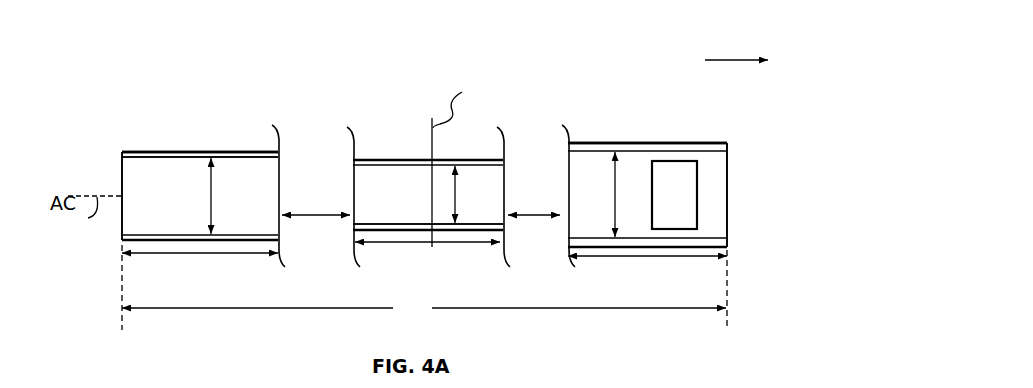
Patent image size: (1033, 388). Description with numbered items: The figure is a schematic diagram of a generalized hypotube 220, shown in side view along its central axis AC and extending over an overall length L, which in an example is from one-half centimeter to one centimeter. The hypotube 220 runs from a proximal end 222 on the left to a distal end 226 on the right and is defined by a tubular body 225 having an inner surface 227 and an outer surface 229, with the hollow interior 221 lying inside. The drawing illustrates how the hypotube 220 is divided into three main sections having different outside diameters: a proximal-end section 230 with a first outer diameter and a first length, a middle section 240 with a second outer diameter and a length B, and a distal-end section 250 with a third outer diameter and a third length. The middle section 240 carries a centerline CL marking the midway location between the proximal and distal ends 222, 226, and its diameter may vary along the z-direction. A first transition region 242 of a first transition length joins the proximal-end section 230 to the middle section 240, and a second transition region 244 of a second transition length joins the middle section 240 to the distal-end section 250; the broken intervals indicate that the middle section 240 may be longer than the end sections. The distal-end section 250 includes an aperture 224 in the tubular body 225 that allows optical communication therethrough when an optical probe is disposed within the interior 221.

The hypotube 220 is at (236, 71).
The interior 221 is at (387, 210).
The proximal end 222 is at (122, 162).
The aperture 224 is at (697, 190).
The tubular body 225 is at (133, 152).
The distal end 226 is at (728, 162).
The inner surface 227 is at (238, 165).
The outer surface 229 is at (687, 142).
The proximal-end section 230 is at (196, 130).
The middle section 240 is at (402, 136).
The first transition region 242 is at (317, 155).
The second transition region 244 is at (537, 147).
The distal-end section 250 is at (664, 125).